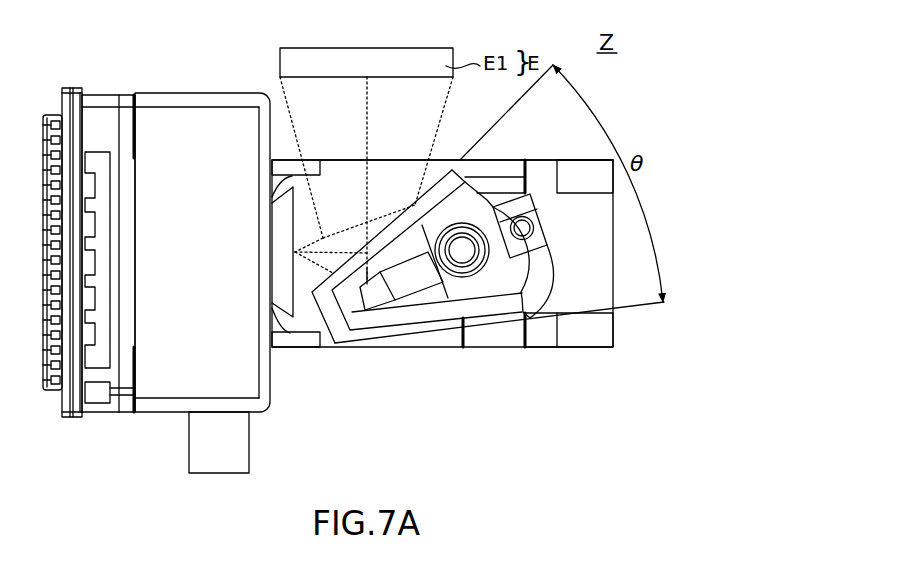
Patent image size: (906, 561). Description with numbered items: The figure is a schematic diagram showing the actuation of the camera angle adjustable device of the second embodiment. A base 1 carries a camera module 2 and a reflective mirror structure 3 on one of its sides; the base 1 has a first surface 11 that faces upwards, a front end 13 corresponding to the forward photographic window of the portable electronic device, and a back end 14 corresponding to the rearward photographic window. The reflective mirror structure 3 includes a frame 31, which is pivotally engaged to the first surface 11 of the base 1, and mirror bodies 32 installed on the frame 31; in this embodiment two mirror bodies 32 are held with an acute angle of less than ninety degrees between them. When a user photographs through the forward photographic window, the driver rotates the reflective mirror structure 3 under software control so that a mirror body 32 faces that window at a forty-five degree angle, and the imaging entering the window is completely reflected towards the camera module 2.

The base 1 is at (446, 264).
The camera module 2 is at (177, 86).
The reflective mirror structure 3 is at (448, 286).
The first surface 11 is at (398, 173).
The front end 13 is at (540, 160).
The back end 14 is at (540, 348).
The frame 31 is at (502, 272).
The mirror body 32 is at (372, 278).